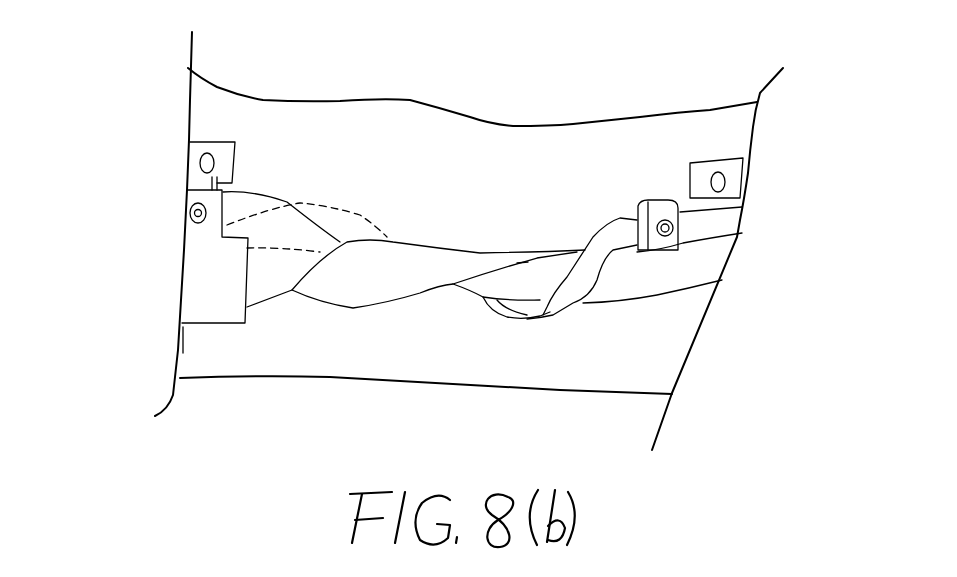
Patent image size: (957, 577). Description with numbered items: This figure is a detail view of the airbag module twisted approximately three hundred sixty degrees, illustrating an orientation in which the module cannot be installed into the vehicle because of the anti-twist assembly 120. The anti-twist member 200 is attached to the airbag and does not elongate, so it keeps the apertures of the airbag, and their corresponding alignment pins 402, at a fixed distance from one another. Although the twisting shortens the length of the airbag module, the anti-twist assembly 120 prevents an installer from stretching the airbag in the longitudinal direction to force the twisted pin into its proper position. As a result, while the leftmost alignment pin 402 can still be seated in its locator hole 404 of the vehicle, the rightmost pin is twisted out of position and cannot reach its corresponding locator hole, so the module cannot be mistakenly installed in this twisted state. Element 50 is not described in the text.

The frame rail 50 is at (707, 268).
The anti-twist assembly 120 is at (445, 242).
The anti-twist member 200 is at (512, 318).
The alignment pin 402 is at (192, 222).
The locator hole 404 is at (187, 158).